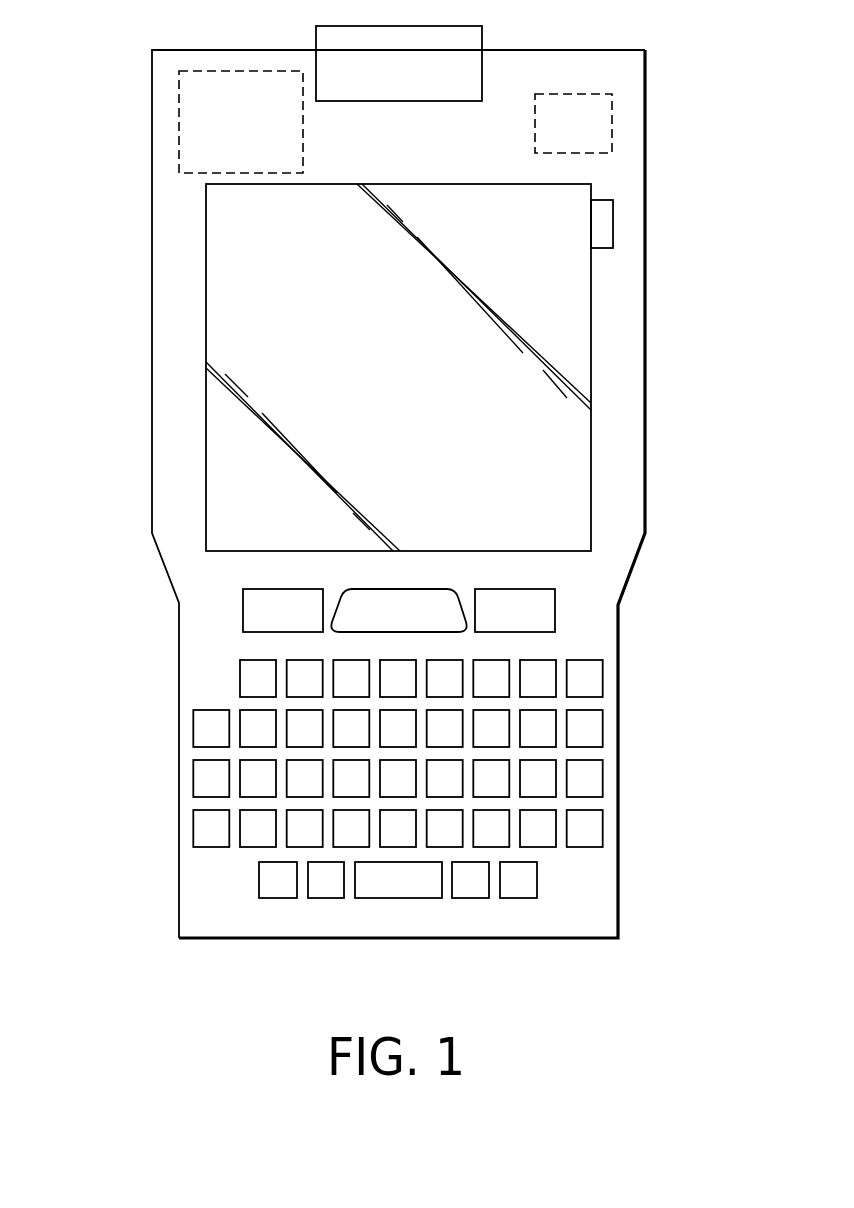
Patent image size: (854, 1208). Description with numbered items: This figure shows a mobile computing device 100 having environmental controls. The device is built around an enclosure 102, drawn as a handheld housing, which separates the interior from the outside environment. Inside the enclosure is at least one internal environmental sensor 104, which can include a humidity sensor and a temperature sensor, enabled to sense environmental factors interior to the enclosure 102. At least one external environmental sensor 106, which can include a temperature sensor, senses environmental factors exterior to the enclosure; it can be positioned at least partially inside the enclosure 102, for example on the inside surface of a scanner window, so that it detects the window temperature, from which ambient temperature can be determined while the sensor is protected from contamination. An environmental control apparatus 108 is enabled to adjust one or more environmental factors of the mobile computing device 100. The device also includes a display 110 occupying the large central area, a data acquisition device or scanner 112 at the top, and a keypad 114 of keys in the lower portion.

The mobile computing device 100 is at (157, 792).
The enclosure 102 is at (175, 345).
The internal environmental sensor 104 is at (612, 124).
The external environmental sensor 106 is at (613, 222).
The environmental control apparatus 108 is at (262, 135).
The display 110 is at (419, 381).
The scanner 112 is at (379, 77).
The keypad 114 is at (223, 690).